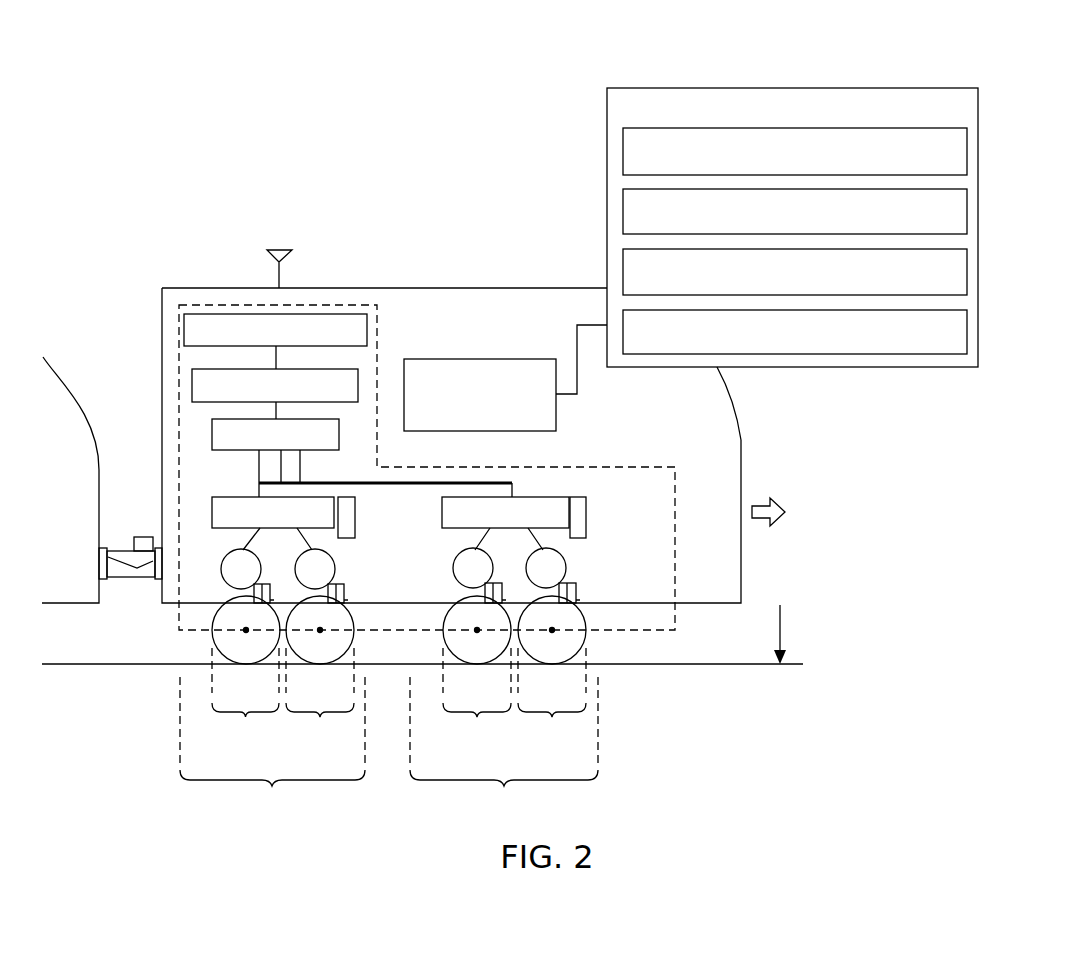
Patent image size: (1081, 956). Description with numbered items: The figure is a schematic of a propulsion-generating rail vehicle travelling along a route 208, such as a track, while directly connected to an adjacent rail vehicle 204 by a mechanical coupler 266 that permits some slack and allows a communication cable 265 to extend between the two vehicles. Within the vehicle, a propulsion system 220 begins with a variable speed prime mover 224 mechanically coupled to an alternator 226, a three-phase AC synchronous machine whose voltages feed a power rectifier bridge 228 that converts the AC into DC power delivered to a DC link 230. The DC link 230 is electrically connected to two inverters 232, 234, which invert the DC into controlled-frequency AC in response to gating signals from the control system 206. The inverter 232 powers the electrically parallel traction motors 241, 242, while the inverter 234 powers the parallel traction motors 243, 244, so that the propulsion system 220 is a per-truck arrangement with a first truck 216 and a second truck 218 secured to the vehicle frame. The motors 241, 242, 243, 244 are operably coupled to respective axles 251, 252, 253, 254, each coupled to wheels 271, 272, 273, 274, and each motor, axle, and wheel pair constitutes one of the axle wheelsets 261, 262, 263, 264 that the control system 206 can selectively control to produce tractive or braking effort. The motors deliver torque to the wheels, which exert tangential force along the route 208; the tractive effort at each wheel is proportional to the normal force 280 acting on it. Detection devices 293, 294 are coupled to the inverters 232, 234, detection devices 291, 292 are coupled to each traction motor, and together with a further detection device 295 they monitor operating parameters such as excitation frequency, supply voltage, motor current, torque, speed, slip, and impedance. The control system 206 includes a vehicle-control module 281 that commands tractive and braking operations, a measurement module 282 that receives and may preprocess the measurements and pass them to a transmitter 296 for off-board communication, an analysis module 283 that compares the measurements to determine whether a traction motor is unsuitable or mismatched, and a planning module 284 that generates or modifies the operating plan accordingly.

The rail vehicle 204 is at (66, 358).
The control system 206 is at (931, 88).
The route 208 is at (708, 666).
The first truck 216 is at (272, 744).
The second truck 218 is at (504, 744).
The propulsion system 220 is at (640, 466).
The prime mover 224 is at (184, 331).
The alternator 226 is at (192, 386).
The power rectifier bridge 228 is at (212, 435).
The DC link 230 is at (515, 486).
The inverter 232 is at (334, 490).
The inverter 234 is at (570, 497).
The traction motor 241 is at (260, 567).
The traction motor 242 is at (335, 558).
The traction motor 243 is at (455, 573).
The traction motor 244 is at (562, 562).
The axle 251 is at (246, 630).
The axle 252 is at (320, 630).
The axle 253 is at (477, 630).
The axle 254 is at (552, 630).
The axle wheelset 261 is at (245, 698).
The axle wheelset 262 is at (320, 698).
The axle wheelset 263 is at (477, 698).
The axle wheelset 264 is at (552, 698).
The communication cable 265 is at (121, 565).
The mechanical coupler 266 is at (128, 586).
The wheels 271 is at (212, 632).
The wheels 272 is at (355, 620).
The wheels 273 is at (444, 633).
The wheels 274 is at (587, 621).
The normal force 280 is at (780, 605).
The vehicle-control module 281 is at (967, 152).
The measurement module 282 is at (967, 213).
The analysis module 283 is at (967, 272).
The planning module 284 is at (967, 333).
The detection device 291 is at (344, 578).
The detection device 292 is at (346, 594).
The detection device 293 is at (355, 517).
The detection device 294 is at (588, 516).
The detection device 295 is at (145, 537).
The transmitter 296 is at (287, 238).